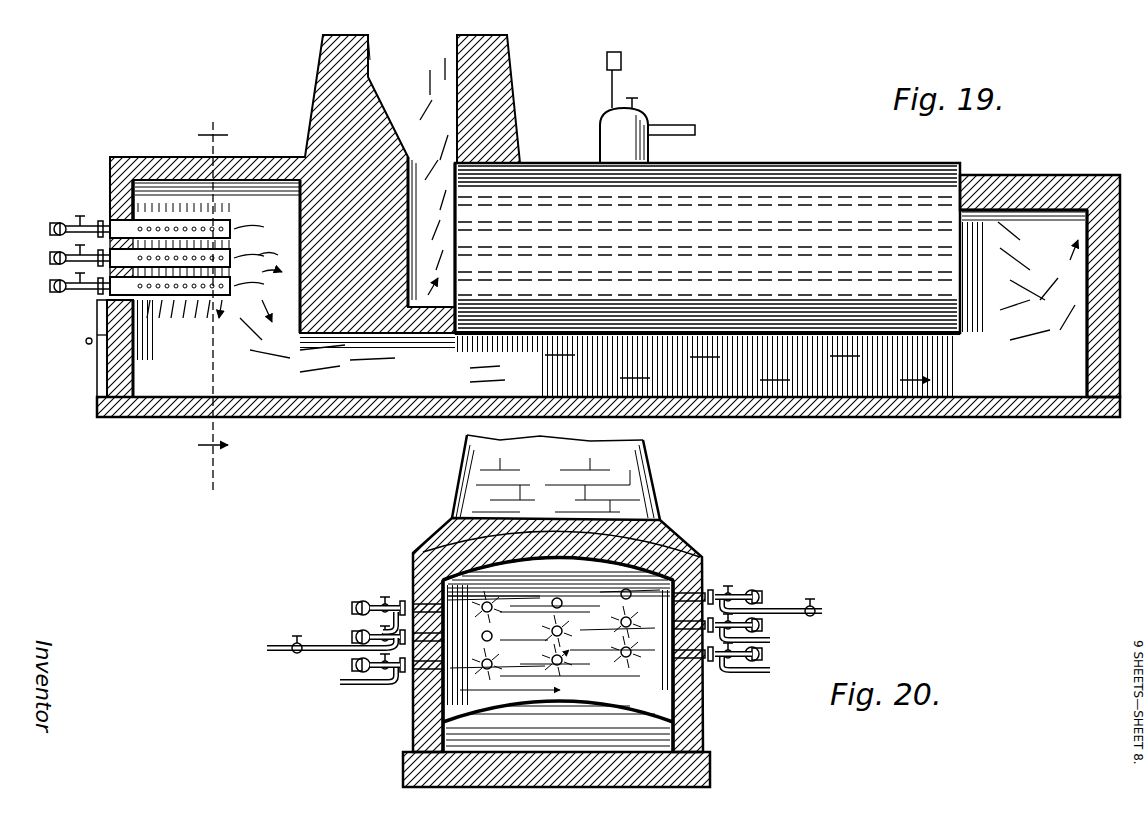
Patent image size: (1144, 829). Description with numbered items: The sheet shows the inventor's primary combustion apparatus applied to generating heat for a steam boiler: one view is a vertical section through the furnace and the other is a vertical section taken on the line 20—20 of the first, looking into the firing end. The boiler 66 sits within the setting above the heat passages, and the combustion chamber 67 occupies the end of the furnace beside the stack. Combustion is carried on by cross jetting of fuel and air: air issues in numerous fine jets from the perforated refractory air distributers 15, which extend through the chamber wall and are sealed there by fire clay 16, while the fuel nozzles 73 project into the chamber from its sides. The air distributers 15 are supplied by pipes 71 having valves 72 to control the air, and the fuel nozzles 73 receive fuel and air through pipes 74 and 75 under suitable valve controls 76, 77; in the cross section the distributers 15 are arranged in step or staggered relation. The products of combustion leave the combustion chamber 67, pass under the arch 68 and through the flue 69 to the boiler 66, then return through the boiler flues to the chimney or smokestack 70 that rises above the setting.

In FIG. 19, the air distributers 15 is at (160, 348).
In FIG. 20, the air distributers 15 is at (562, 600).
In FIG. 19, the fire clay 16 is at (125, 210).
In FIG. 19, the feed pipes 20 is at (212, 302).
In FIG. 19, the boiler 66 is at (790, 195).
In FIG. 19, the combustion chamber 67 is at (217, 378).
In FIG. 20, the combustion chamber 67 is at (697, 697).
In FIG. 19, the arch 68 is at (393, 340).
In FIG. 20, the arch 68 is at (603, 697).
In FIG. 19, the flue 69 is at (353, 380).
In FIG. 20, the flue 69 is at (558, 723).
In FIG. 19, the chimney 70 is at (396, 125).
In FIG. 20, the chimney 70 is at (665, 492).
In FIG. 19, the pipes 71 is at (100, 222).
In FIG. 19, the valves 72 is at (76, 236).
In FIG. 19, the fuel nozzles 73 is at (243, 180).
In FIG. 20, the fuel nozzles 73 is at (420, 602).
In FIG. 20, the pipes 74 is at (393, 607).
In FIG. 19, the pipes 75 is at (260, 262).
In FIG. 20, the pipes 75 is at (313, 643).
In FIG. 20, the valve controls 76 is at (383, 612).
In FIG. 20, the valve controls 77 is at (298, 654).